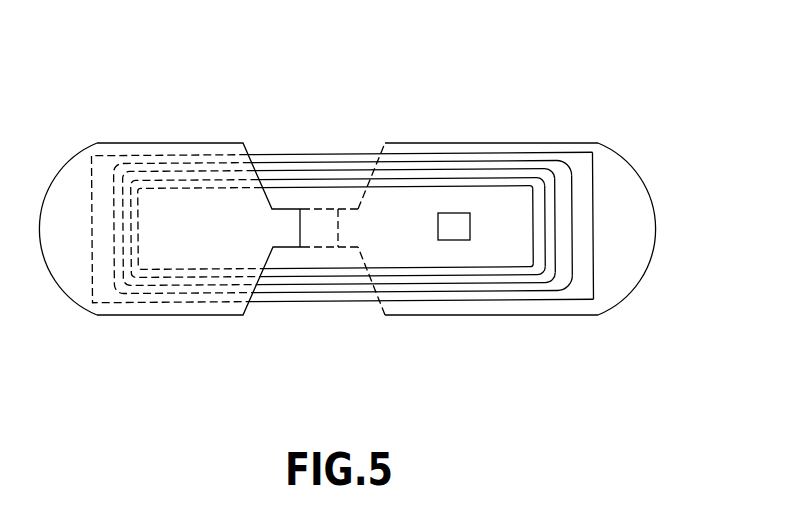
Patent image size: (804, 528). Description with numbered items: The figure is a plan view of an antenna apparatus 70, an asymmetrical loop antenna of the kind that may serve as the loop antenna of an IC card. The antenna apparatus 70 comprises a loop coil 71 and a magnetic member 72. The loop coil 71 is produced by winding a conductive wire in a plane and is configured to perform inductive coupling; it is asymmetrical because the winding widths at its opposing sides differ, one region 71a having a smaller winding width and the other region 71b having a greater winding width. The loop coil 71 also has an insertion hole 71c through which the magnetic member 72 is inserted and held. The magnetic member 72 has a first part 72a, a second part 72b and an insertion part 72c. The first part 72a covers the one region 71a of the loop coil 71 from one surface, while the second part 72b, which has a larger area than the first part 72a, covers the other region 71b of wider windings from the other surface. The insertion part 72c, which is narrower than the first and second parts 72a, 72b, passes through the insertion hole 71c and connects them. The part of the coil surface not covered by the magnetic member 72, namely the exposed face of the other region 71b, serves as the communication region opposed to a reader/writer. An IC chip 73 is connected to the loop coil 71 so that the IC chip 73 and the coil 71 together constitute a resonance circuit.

The antenna apparatus 70 is at (417, 72).
The loop coil 71 is at (327, 170).
The one region of the loop coil 71a is at (130, 217).
The other region of the loop coil 71b is at (563, 208).
The insertion hole 71c is at (325, 235).
The magnetic member 72 is at (217, 258).
The first part 72a is at (73, 272).
The second part 72b is at (628, 237).
The insertion part 72c is at (282, 237).
The IC chip 73 is at (455, 240).